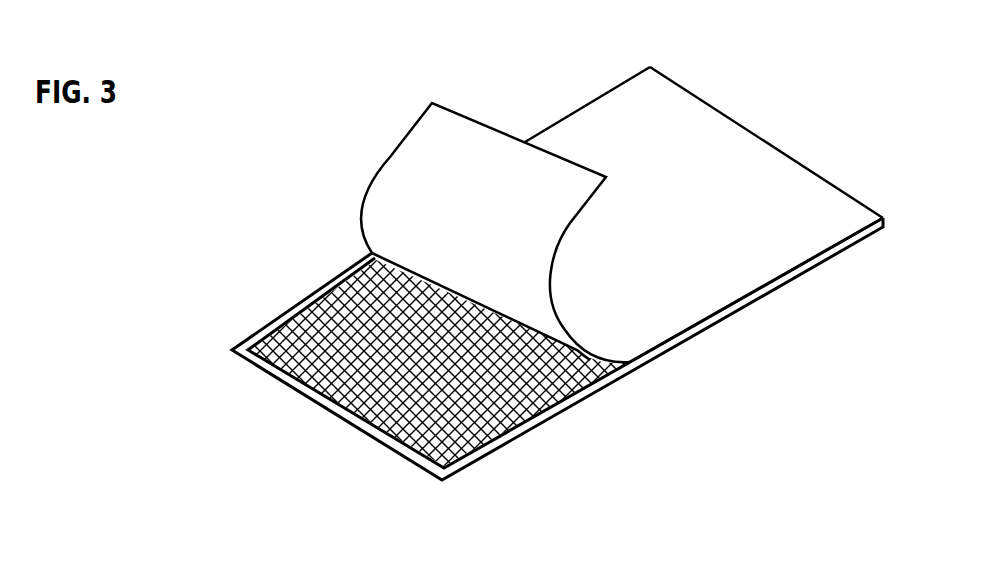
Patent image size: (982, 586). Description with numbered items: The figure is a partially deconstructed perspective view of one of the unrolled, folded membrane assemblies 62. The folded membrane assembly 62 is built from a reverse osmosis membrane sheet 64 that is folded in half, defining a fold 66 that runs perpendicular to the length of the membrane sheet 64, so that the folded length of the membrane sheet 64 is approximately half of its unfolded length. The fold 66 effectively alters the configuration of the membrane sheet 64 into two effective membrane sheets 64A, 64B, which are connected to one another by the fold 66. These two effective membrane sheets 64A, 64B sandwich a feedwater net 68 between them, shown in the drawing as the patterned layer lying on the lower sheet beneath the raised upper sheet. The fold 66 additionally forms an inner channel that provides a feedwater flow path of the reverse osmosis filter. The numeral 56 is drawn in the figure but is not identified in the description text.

The folded membrane assembly 62 is at (208, 269).
The reverse osmosis membrane sheet 64 is at (398, 167).
The effective membrane sheet 64A is at (713, 325).
The effective membrane sheet 64B is at (610, 125).
The fold 66 is at (762, 137).
The substrate layer 56 is at (800, 210).
The feedwater net 68 is at (469, 437).